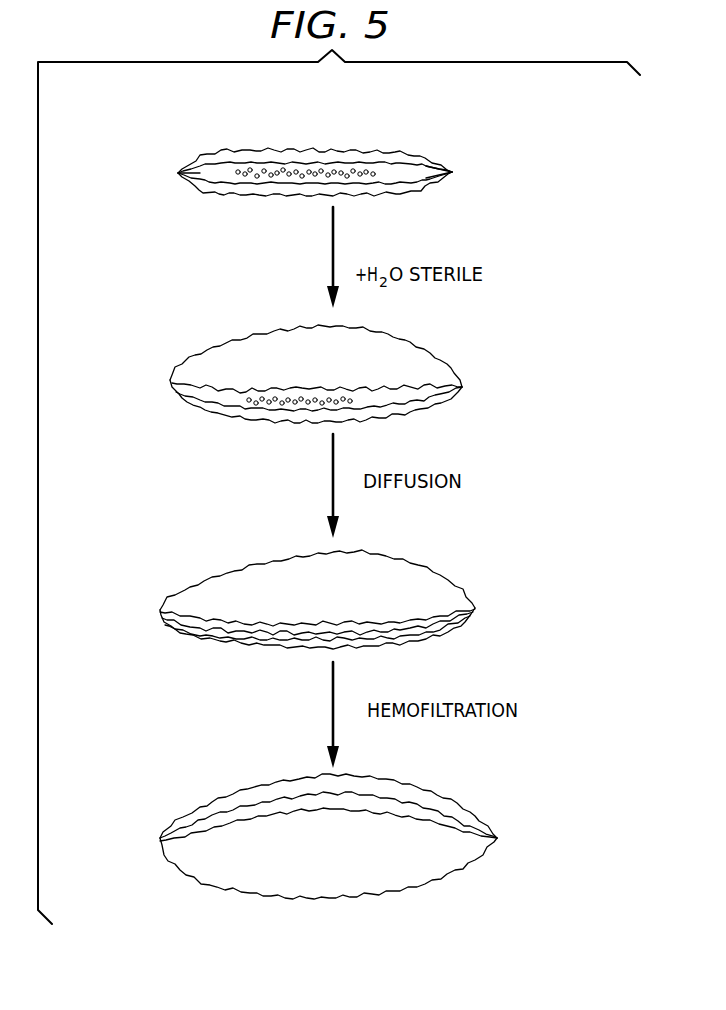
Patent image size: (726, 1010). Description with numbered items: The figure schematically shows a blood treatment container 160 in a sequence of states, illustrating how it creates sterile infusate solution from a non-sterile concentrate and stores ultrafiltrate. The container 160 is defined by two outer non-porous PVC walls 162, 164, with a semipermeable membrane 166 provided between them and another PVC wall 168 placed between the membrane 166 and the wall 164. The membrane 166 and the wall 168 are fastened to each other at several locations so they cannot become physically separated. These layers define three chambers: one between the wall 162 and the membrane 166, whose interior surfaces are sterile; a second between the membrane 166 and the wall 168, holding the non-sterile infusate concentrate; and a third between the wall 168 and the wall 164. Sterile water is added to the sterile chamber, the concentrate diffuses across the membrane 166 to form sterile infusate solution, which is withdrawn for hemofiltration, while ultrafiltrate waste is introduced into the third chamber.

The container 160 is at (128, 168).
The outer PVC wall 162 is at (436, 160).
The outer PVC wall 164 is at (438, 186).
The semipermeable membrane 166 is at (378, 161).
The PVC wall 168 is at (378, 189).